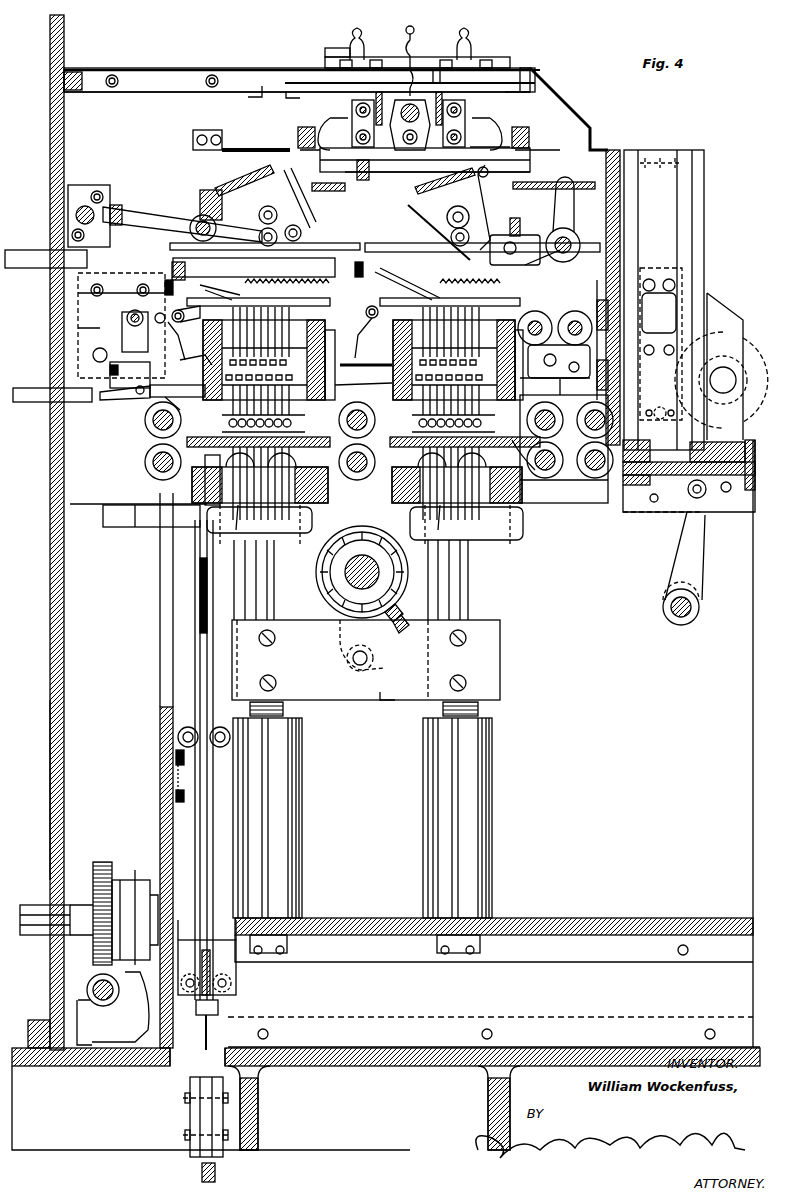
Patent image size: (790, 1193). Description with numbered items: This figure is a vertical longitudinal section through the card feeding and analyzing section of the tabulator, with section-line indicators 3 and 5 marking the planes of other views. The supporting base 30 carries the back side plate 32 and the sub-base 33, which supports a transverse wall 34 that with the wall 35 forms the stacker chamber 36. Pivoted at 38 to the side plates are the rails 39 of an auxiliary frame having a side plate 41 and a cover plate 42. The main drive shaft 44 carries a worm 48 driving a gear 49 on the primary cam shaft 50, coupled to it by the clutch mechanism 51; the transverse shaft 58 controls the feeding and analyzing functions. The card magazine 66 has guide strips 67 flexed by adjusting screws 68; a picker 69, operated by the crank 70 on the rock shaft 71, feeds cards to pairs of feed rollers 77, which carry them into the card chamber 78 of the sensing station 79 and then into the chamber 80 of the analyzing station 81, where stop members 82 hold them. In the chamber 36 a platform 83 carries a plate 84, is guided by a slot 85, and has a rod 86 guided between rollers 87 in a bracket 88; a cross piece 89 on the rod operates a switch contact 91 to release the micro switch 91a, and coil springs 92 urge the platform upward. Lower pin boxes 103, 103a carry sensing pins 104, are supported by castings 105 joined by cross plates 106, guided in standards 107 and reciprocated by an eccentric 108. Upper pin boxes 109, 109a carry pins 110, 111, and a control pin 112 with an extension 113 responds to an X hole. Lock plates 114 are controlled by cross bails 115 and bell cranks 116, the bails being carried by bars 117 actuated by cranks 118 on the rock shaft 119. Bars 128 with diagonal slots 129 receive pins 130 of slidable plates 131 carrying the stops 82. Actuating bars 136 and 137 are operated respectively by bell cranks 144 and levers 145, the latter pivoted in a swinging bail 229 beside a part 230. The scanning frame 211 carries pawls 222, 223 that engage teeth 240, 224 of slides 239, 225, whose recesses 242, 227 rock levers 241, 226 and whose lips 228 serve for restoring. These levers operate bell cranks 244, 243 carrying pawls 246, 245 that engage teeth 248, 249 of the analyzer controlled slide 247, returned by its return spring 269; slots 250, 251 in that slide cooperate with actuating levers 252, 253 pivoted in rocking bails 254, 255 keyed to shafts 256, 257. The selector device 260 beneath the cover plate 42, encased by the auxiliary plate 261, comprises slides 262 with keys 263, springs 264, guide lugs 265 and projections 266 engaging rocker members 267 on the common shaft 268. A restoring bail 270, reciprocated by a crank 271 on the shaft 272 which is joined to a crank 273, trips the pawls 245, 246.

The section line 3- 3 is at (424, 25).
The section line 5- 5 is at (64, 98).
The supporting base 30 is at (380, 1072).
The back side plate 32 is at (742, 741).
The sub-base 33 is at (562, 918).
The transverse wall 34 is at (172, 735).
The wall 35 is at (56, 780).
The chamber 36 is at (73, 667).
The pivotal connection 38 is at (738, 380).
The rails 39 is at (718, 310).
The side plate 41 is at (138, 100).
The cover plate 42 is at (248, 68).
The main drive shaft 44 is at (88, 990).
The worm 48 is at (87, 1005).
The gear 49 is at (103, 862).
The primary cam shaft 50 is at (42, 905).
The clutch mechanism 51 is at (150, 860).
The transverse shaft 58 is at (352, 585).
The card magazine 66 is at (716, 263).
The vertical guide strips 67 is at (672, 212).
The adjusting screws 68 is at (660, 410).
The reciprocating picker 69 is at (694, 478).
The crank 70 is at (700, 545).
The rock shaft 71 is at (692, 607).
The feed rollers 77 is at (147, 445).
The card chamber 78 is at (518, 468).
The sensing station 79 is at (531, 497).
The chamber 80 is at (312, 447).
The analyzing station 81 is at (336, 494).
The stop members 82 is at (200, 432).
The platform 83 is at (152, 525).
The plate 84 is at (85, 510).
The slot 85 is at (168, 646).
The elongated rod 86 is at (212, 620).
The rollers 87 is at (205, 725).
The bracket 88 is at (228, 945).
The cross piece 89 is at (222, 1008).
The switch contact 91 is at (205, 1116).
The micro switch 91a is at (195, 1093).
The coil springs 92 is at (208, 585).
The pin box 103 is at (520, 510).
The pin box 103a is at (210, 488).
The sensing pin 104 is at (245, 505).
The castings 105 is at (325, 512).
The cross plates 106 is at (384, 700).
The standards 107 is at (290, 785).
The eccentric 108 is at (360, 650).
The upper pin box 109 is at (515, 378).
The upper pin box 109a is at (328, 378).
The pins 110 is at (470, 305).
The pins 111 is at (262, 288).
The control pin 112 is at (178, 316).
The extension 113 is at (185, 392).
The lock plates 114 is at (296, 360).
The cross bails 115 is at (345, 380).
The bell cranks 116 is at (182, 348).
The bars 117 is at (568, 378).
The cranks 118 is at (540, 325).
The rock shaft 119 is at (575, 325).
The bars 128 is at (195, 365).
The diagonal slots 129 is at (435, 372).
The pins 130 is at (200, 364).
The slidable plate 131 is at (392, 386).
The actuating bar 136 is at (27, 258).
The actuating bar 137 is at (28, 395).
The bell crank 144 is at (98, 210).
The lever 145 is at (128, 392).
The scanning frame 211 is at (168, 268).
The pawls 222 is at (430, 292).
The pawls 223 is at (238, 290).
The teeth 224 is at (280, 284).
The slide 225 is at (222, 258).
The lever 226 is at (168, 218).
The recess 227 is at (272, 245).
The lips 228 is at (170, 258).
The swinging bail 229 is at (122, 330).
The stud 230 is at (128, 316).
The slide 239 is at (476, 270).
The tooth 240 is at (478, 286).
The lever 241 is at (440, 235).
The recess 242 is at (468, 250).
The bell crank 243 is at (285, 200).
The bell crank 244 is at (470, 205).
The pawl 245 is at (272, 170).
The pawl 246 is at (458, 170).
The analyzer controlled slide 247 is at (410, 165).
The teeth 248 is at (330, 190).
The teeth 249 is at (300, 150).
The slot 250 is at (298, 130).
The slot 251 is at (518, 130).
The actuating member 252 is at (322, 128).
The actuating member 253 is at (500, 118).
The rocking bail 254 is at (352, 118).
The rocking bail 255 is at (465, 128).
The shaft 256 is at (357, 105).
The shaft 257 is at (460, 108).
The selector device 260 is at (489, 54).
The auxiliary plate 261 is at (520, 70).
The slides 262 is at (495, 62).
The key 263 is at (362, 33).
The spring 264 is at (335, 57).
The guide lug 265 is at (440, 70).
The projection 266 is at (407, 40).
The rocker member 267 is at (420, 150).
The common shaft 268 is at (418, 140).
The return spring 269 is at (250, 150).
The restoring bail 270 is at (517, 190).
The crank 271 is at (570, 203).
The shaft 272 is at (572, 242).
The crank 273 is at (525, 250).